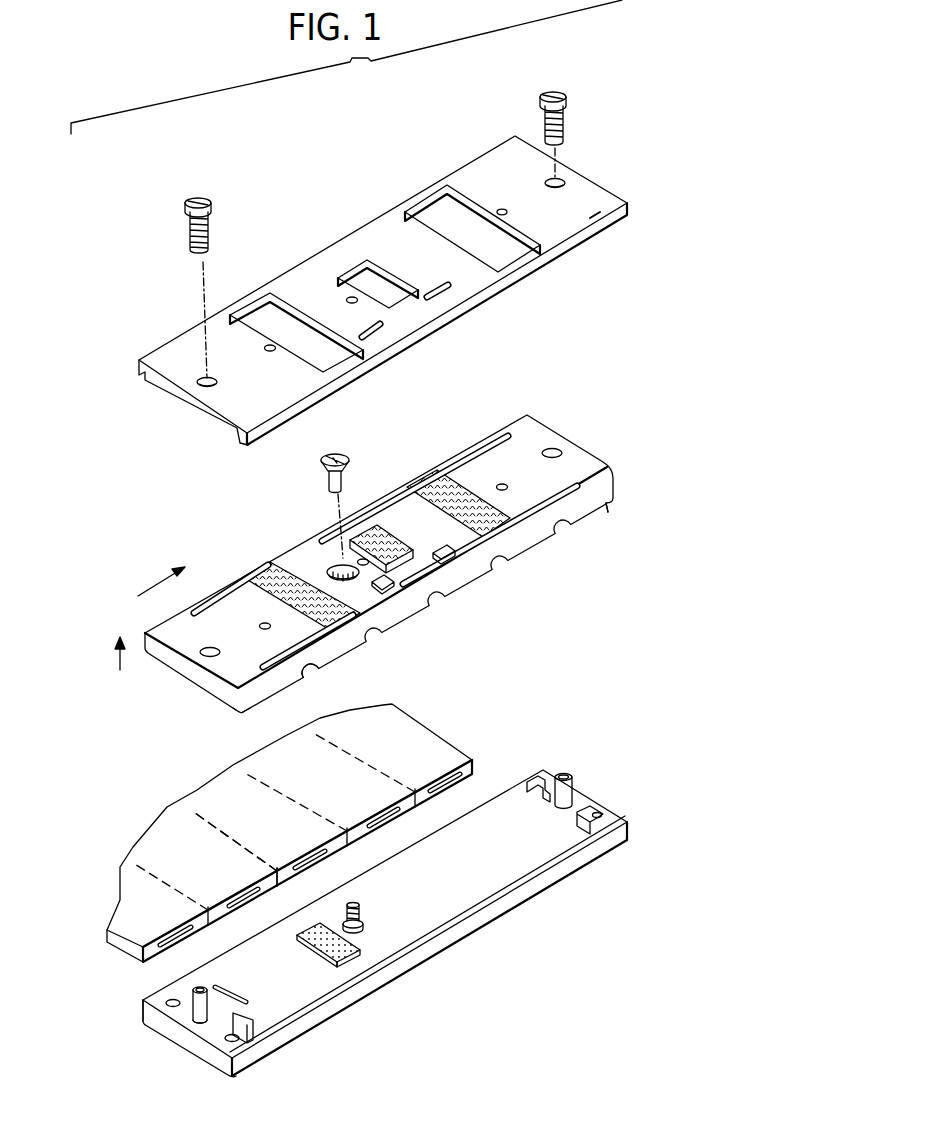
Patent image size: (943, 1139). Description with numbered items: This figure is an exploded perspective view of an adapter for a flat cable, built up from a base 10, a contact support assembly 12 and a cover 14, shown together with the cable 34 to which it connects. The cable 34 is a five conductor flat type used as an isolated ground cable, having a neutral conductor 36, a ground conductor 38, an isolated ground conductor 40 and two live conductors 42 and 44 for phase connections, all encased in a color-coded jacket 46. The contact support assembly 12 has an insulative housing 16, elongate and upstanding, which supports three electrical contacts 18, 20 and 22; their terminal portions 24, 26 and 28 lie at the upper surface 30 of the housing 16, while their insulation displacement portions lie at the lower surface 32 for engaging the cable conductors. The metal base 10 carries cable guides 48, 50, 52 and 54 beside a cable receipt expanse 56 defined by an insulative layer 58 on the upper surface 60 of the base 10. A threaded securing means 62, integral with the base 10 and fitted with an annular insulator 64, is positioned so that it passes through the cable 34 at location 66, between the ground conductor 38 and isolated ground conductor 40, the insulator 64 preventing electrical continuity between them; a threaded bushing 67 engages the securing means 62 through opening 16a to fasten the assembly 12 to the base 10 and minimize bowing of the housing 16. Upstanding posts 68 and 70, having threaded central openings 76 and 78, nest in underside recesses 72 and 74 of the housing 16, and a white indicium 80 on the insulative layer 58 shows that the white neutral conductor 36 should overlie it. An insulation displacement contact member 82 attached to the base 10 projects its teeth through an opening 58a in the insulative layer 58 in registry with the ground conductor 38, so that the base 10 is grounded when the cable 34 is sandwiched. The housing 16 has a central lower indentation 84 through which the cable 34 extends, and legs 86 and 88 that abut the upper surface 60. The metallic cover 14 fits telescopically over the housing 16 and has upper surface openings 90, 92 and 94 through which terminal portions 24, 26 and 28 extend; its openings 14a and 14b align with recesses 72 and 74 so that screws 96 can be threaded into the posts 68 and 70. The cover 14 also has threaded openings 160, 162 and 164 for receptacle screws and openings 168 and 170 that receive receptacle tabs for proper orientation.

The base 10 is at (389, 900).
The contact support assembly 12 is at (382, 559).
The cover 14 is at (388, 256).
The opening 14a is at (205, 389).
The opening 14b is at (562, 182).
The housing 16 is at (604, 464).
The opening 16a is at (356, 584).
The electrical contact 18 is at (285, 580).
The electrical contact 20 is at (384, 527).
The electrical contact 22 is at (454, 470).
The terminal portion 24 is at (277, 596).
The terminal portion 26 is at (358, 540).
The terminal portion 28 is at (450, 505).
The upper surface 30 is at (226, 675).
The lower surface 32 is at (229, 703).
The cable 34 is at (294, 819).
The neutral conductor 36 is at (174, 934).
The ground conductor 38 is at (243, 893).
The isolated ground conductor 40 is at (314, 856).
The live conductor 42 is at (387, 812).
The live conductor 44 is at (445, 774).
The jacket 46 is at (284, 876).
The cable guide 48 is at (527, 778).
The cable guide 50 is at (600, 812).
The cable guide 52 is at (178, 1000).
The cable guide 54 is at (256, 1021).
The cable receipt expanse 56 is at (475, 867).
The insulative layer 58 is at (399, 956).
The opening 58a is at (336, 922).
The upper surface 60 is at (218, 1037).
The securing means 62 is at (362, 901).
The annular insulator 64 is at (366, 927).
The location 66 is at (197, 813).
The threaded bushing 67 is at (351, 466).
The upstanding post 68 is at (196, 1013).
The upstanding post 70 is at (608, 784).
The underside recess 72 is at (203, 657).
The underside recess 74 is at (554, 449).
The threaded central opening 76 is at (209, 992).
The threaded central opening 78 is at (566, 772).
The white indicium 80 is at (247, 986).
The insulation displacement contact member 82 is at (331, 962).
The central lower indentation 84 is at (284, 687).
The leg 86 is at (254, 711).
The leg 88 is at (608, 512).
The upper surface opening 90 is at (281, 318).
The upper surface opening 92 is at (369, 272).
The upper surface opening 94 is at (450, 216).
The screws 96 is at (212, 203).
The threaded opening 160 is at (270, 353).
The threaded opening 162 is at (503, 209).
The threaded opening 164 is at (347, 299).
The opening 168 is at (385, 333).
The opening 170 is at (449, 296).